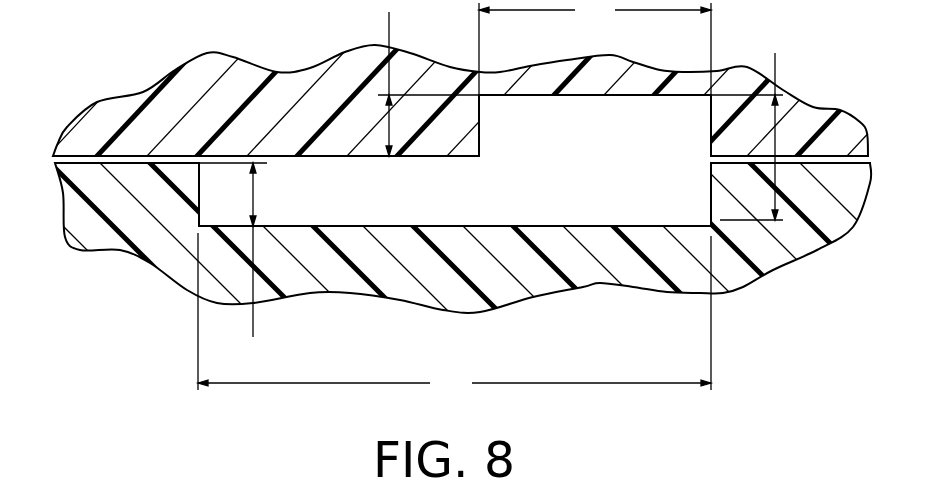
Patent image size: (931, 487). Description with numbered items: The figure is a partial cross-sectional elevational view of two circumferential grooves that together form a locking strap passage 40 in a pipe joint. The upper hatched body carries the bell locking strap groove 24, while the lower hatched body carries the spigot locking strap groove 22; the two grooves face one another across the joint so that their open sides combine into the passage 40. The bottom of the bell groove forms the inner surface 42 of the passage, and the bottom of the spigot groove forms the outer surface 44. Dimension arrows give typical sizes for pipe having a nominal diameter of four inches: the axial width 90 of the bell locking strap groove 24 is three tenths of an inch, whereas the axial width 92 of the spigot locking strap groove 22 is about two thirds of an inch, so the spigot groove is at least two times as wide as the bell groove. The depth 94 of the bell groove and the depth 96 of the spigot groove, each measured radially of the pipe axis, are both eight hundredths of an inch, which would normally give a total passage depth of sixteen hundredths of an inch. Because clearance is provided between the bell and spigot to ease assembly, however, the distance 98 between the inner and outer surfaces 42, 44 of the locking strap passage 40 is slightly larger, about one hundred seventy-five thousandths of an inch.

The spigot locking strap groove 22 is at (711, 192).
The bell locking strap groove 24 is at (480, 138).
The locking strap passage 40 is at (455, 160).
The inner surface of locking strap passage 42 is at (602, 97).
The outer surface of locking strap passage 44 is at (405, 226).
The axial width of bell locking strap groove 90 is at (595, 47).
The axial width of spigot locking strap groove 92 is at (454, 315).
The depth of bell locking strap groove 94 is at (389, 12).
The depth of spigot locking strap groove 96 is at (253, 337).
The distance between inner and outer surfaces 98 is at (775, 53).